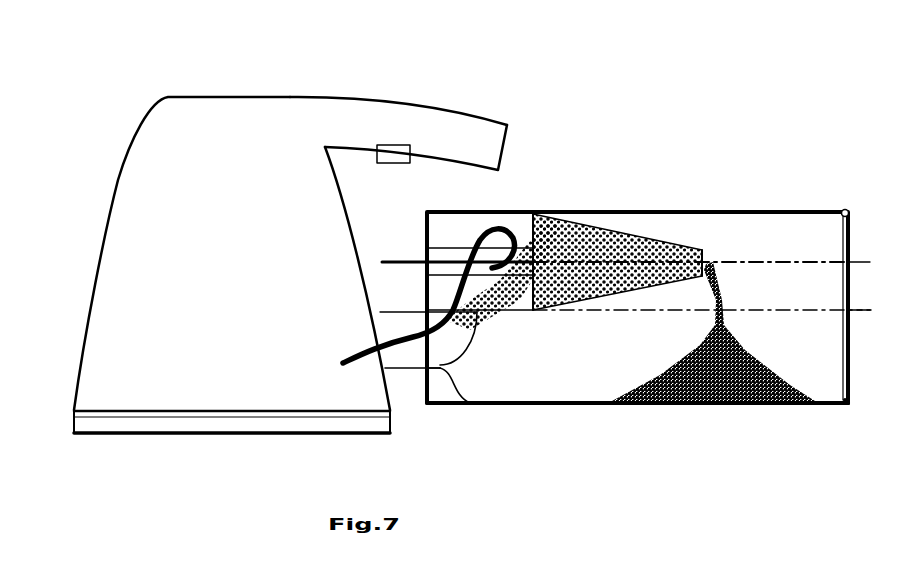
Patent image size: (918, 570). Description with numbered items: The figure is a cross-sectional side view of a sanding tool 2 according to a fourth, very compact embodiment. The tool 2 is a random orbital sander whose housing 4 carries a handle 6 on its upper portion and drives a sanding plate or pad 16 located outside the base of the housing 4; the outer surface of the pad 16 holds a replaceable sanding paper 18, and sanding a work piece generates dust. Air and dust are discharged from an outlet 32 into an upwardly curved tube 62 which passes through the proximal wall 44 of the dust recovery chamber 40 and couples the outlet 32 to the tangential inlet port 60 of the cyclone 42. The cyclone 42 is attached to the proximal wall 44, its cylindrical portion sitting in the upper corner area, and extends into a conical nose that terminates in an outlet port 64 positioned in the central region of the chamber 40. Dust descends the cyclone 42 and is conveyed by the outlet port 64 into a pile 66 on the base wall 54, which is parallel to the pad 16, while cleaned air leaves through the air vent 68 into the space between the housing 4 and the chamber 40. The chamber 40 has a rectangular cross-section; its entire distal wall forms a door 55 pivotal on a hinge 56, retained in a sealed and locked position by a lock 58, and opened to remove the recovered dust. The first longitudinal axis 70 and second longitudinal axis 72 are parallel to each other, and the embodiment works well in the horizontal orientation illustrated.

The tool 2 is at (390, 73).
The housing 4 is at (90, 273).
The handle 6 is at (492, 135).
The sanding plate or pad 16 is at (74, 424).
The sanding paper 18 is at (172, 435).
The outlet 32 is at (390, 311).
The dust recovery chamber 40 is at (540, 382).
The cyclone 42 is at (616, 240).
The proximal wall 44 is at (427, 380).
The base wall 54 is at (585, 403).
The door 55 is at (850, 375).
The hinge 56 is at (845, 210).
The lock 58 is at (847, 403).
The inlet port 60 is at (465, 320).
The tube 62 is at (473, 405).
The outlet port 64 is at (703, 255).
The pile 66 is at (725, 403).
The air vent 68 is at (423, 252).
The first longitudinal axis 70 is at (870, 262).
The second longitudinal axis 72 is at (873, 310).